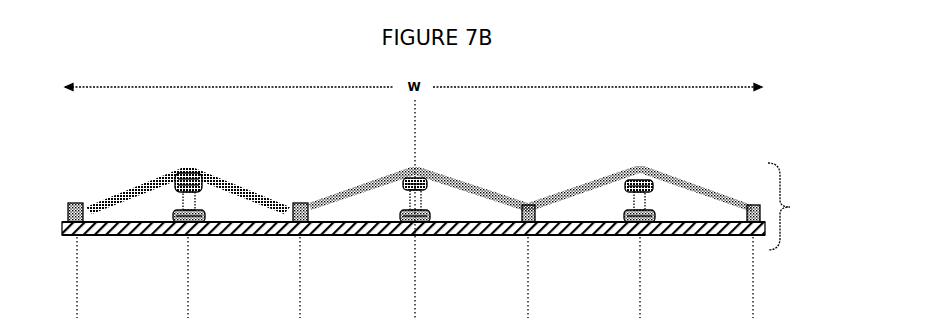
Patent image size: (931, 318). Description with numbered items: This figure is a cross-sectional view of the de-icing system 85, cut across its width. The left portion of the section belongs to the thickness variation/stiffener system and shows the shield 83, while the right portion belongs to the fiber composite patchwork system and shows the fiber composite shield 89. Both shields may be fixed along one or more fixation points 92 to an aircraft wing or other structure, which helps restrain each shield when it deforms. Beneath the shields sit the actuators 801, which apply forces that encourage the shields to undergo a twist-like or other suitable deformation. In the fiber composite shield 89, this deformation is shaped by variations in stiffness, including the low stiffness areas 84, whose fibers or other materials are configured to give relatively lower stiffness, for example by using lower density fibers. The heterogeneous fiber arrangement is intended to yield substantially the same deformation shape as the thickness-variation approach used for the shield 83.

The shield 83 is at (155, 177).
The fiber composite shield 89 is at (573, 193).
The actuators 801 is at (643, 180).
The fixation points 92 is at (515, 235).
The low stiffness areas 84 is at (540, 317).
The de-icing system 85 is at (782, 206).